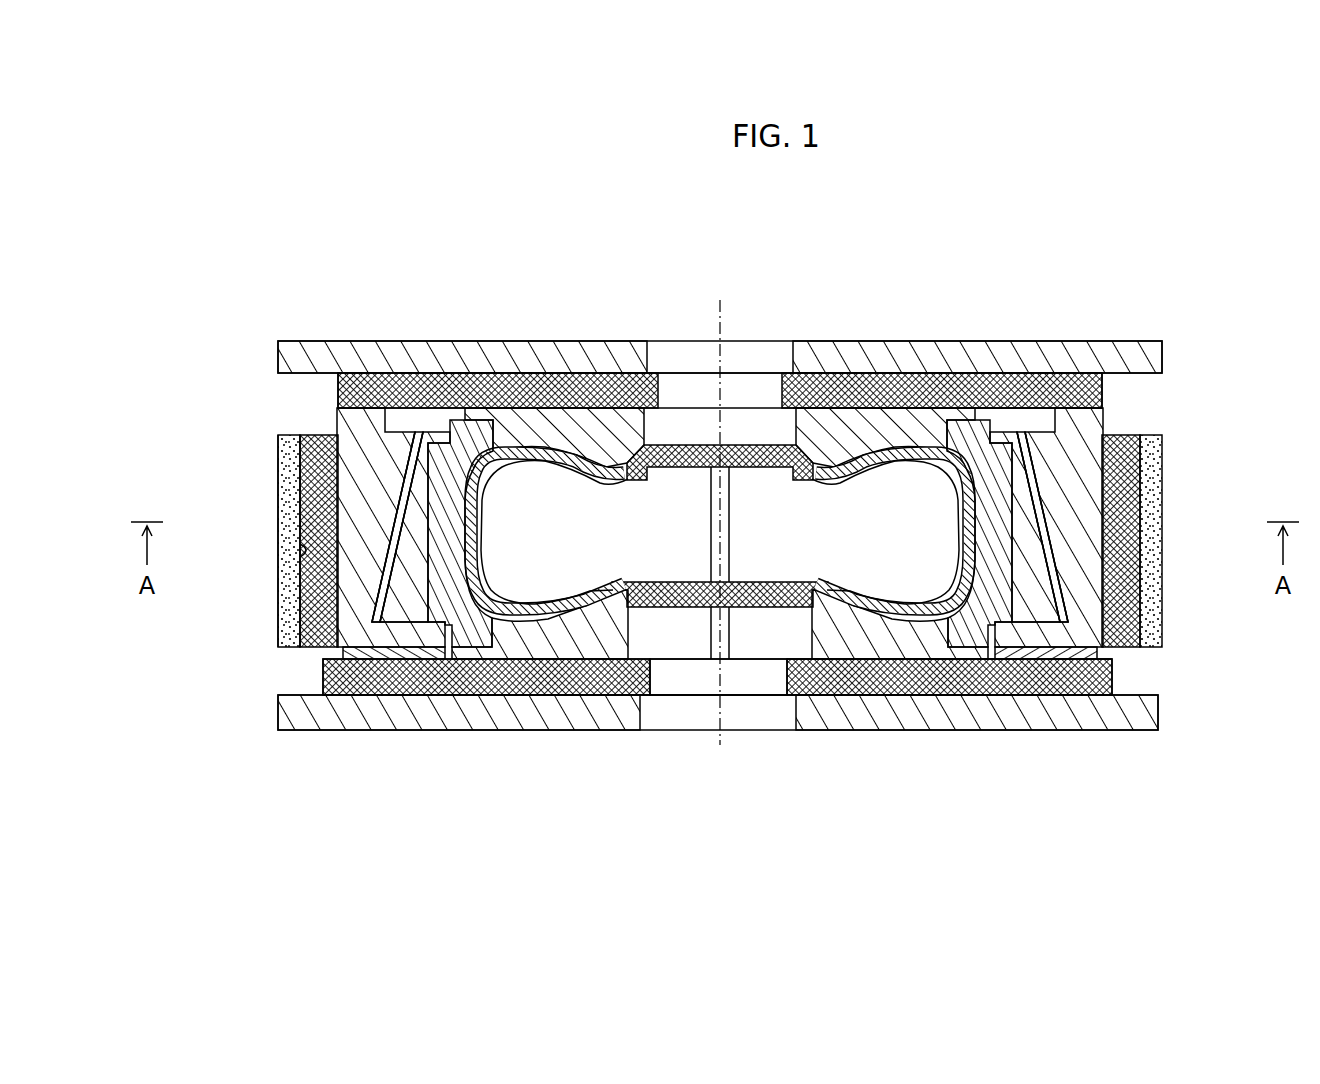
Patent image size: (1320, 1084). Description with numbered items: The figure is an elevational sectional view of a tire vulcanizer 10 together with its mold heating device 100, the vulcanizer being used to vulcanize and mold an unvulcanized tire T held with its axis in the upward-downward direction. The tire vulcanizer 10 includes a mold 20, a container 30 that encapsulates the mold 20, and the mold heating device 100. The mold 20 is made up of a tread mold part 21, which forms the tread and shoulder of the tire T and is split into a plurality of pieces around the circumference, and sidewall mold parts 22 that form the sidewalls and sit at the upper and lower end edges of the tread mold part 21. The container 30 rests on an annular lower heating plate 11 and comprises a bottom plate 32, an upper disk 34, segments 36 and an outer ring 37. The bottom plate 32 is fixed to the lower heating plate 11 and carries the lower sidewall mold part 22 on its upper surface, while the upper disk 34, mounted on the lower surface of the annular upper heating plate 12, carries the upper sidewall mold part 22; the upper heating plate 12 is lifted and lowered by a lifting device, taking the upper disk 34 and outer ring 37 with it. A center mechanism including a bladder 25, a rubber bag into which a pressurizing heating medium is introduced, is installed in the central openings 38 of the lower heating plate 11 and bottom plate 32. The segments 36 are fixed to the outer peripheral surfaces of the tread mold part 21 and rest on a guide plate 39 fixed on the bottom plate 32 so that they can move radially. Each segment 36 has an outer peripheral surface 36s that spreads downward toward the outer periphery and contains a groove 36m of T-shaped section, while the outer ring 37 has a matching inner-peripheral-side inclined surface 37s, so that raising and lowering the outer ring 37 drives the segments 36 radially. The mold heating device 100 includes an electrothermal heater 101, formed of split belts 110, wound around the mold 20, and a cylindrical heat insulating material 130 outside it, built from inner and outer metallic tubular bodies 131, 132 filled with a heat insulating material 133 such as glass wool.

The tire vulcanizer 10 is at (704, 513).
The lower heating plate 11 is at (1158, 727).
The upper heating plate 12 is at (1040, 341).
The mold 20 is at (888, 408).
The tread mold part 21 is at (1015, 618).
The sidewall mold part 22 is at (849, 406).
The bladder 25 is at (948, 547).
The container 30 is at (786, 546).
The bottom plate 32 is at (953, 676).
The upper disk 34 is at (1103, 390).
The segment 36 is at (1060, 524).
The outer peripheral surface 36s is at (1030, 472).
The groove 36m is at (1050, 576).
The outer ring 37 is at (1103, 424).
The inner-peripheral-side inclined surface 37s is at (1052, 597).
The central opening 38 is at (782, 680).
The guide plate 39 is at (1098, 657).
The mold heating device 100 is at (660, 491).
The electrothermal heater 101 is at (660, 541).
The split belt 110 is at (666, 541).
The heat insulating material 130 is at (275, 517).
The tubular body 131 is at (305, 548).
The tubular body 132 is at (277, 575).
The heat insulating material 133 is at (288, 617).
The tire T is at (948, 518).